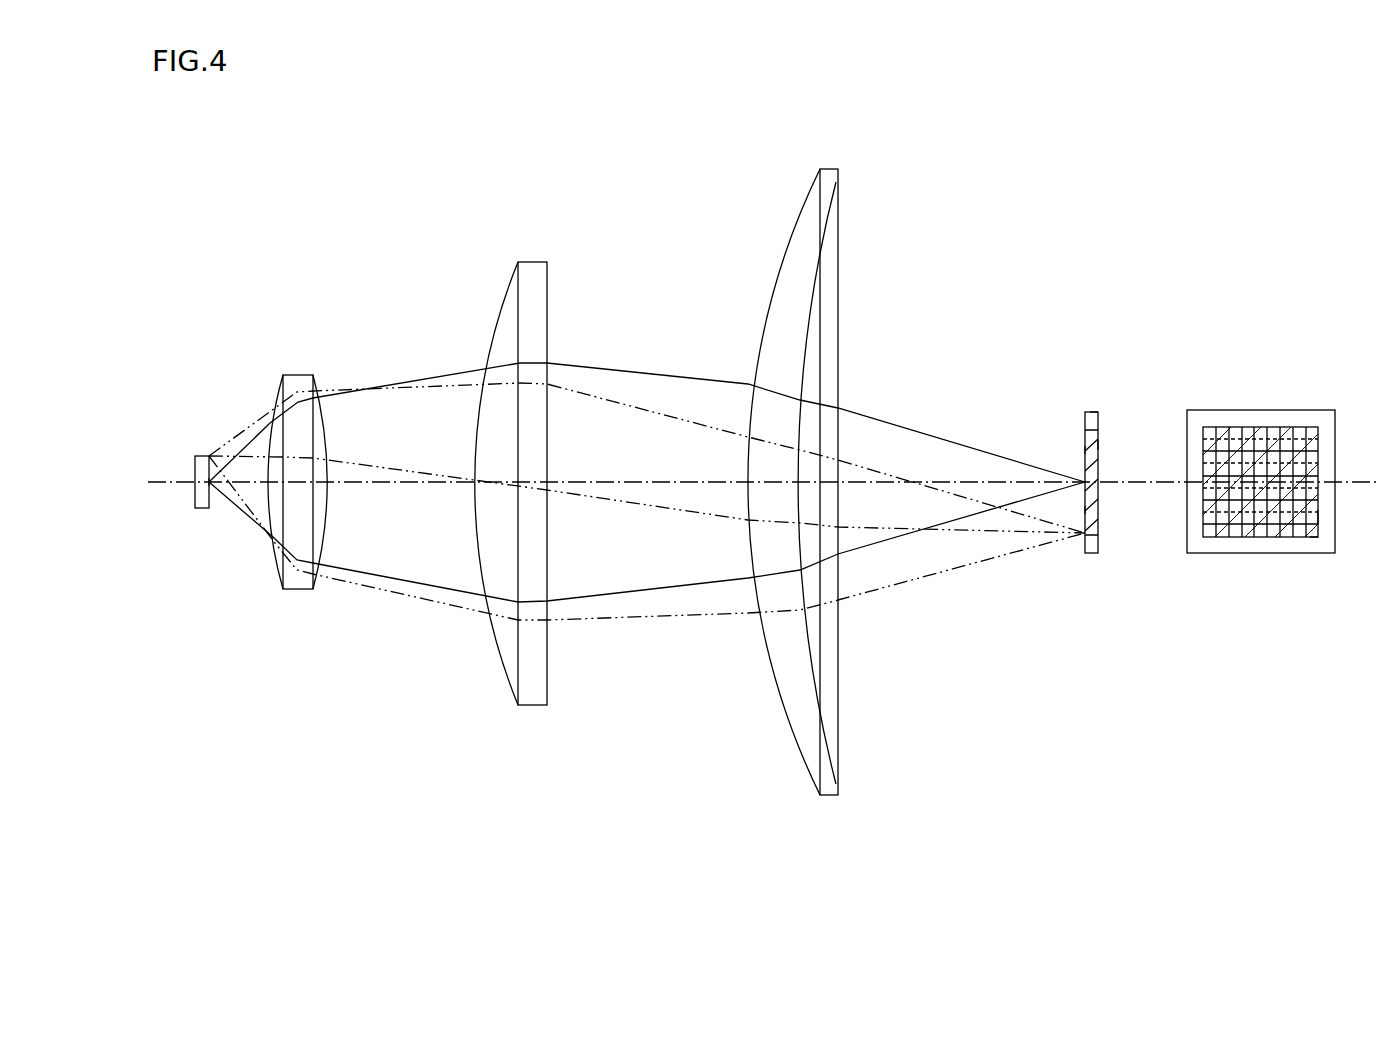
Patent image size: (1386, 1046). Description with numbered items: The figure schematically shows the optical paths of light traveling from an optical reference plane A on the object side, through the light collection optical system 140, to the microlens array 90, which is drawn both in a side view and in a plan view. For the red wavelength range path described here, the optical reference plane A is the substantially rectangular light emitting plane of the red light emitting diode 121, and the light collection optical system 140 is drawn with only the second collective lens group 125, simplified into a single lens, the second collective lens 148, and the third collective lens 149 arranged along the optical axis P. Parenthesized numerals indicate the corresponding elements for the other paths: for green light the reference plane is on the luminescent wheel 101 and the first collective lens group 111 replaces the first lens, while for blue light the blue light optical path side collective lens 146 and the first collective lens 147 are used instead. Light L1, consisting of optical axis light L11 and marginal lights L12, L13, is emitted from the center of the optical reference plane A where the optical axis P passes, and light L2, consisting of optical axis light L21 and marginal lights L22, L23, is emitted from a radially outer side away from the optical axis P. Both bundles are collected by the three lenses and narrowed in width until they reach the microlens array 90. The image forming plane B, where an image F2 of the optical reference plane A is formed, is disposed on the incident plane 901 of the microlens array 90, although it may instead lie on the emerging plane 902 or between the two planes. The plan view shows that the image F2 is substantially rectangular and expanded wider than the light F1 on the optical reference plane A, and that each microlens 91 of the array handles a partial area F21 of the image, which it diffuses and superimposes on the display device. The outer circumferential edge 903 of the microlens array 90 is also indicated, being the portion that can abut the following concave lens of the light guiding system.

The light collection optical system 140 is at (300, 240).
The red light emitting diode 121 is at (162, 555).
The luminescent wheel 101 is at (192, 526).
The second collective lens group 125 is at (274, 559).
The first collective lens group 111 is at (274, 559).
The blue light optical path side collective lens 146 is at (297, 612).
The second collective lens 148 is at (505, 558).
The first collective lens 147 is at (522, 724).
The third collective lens 149 is at (789, 759).
The microlens array 90 is at (1155, 444).
The incident plane 901 is at (1069, 447).
The emerging plane 902 is at (1111, 442).
The outer circumferential edge 903 is at (1098, 412).
The microlens 91 is at (1318, 517).
The optical axis P is at (754, 354).
The light on the optical reference plane F1 is at (222, 532).
The optical reference plane A is at (212, 500).
The image F2 is at (1085, 450).
The partial area F21 is at (1314, 535).
The image forming plane B is at (1085, 510).
The light L1 is at (647, 463).
The optical axis light of light L1 L11 is at (630, 475).
The marginal light of light L1 L12 is at (585, 368).
The marginal light of light L1 L13 is at (612, 594).
The light L2 is at (647, 507).
The optical axis light of light L2 L21 is at (690, 515).
The marginal light of light L2 L22 is at (708, 425).
The marginal light of light L2 L23 is at (660, 620).